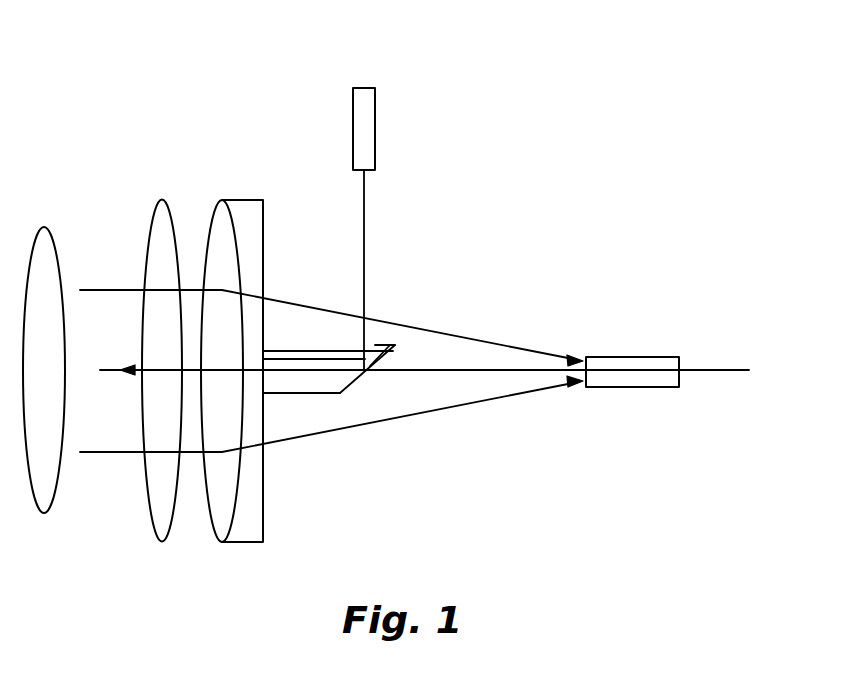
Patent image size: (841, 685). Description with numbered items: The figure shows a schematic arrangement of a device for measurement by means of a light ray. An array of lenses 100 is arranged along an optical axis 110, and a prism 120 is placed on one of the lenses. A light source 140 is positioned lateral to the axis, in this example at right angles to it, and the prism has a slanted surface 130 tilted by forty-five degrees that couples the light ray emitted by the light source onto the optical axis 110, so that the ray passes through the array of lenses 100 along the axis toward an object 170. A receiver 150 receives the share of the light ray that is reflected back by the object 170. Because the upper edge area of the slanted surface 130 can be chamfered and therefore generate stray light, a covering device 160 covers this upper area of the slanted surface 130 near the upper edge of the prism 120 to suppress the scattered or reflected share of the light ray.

The array of lenses 100 is at (190, 213).
The optical axis 110 is at (700, 370).
The prism 120 is at (278, 350).
The slanted surface 130 is at (357, 378).
The light source 140 is at (364, 88).
The receiver 150 is at (635, 357).
The covering device 160 is at (385, 345).
The object 170 is at (43, 228).